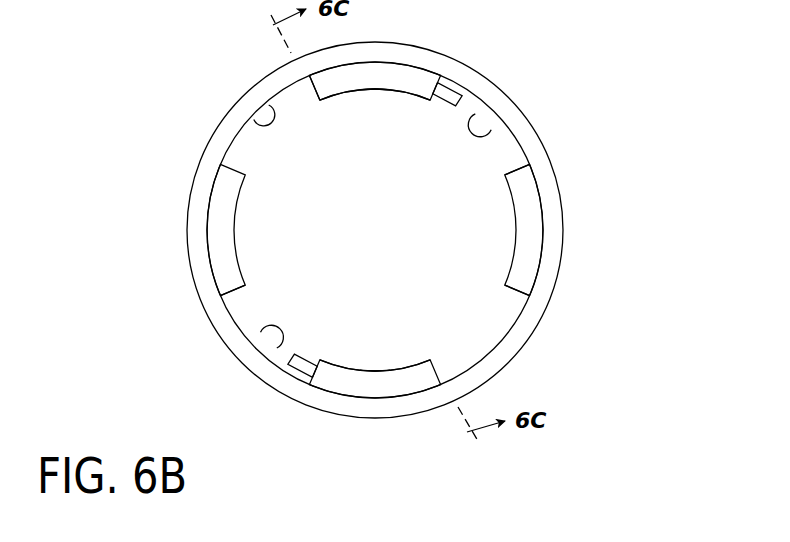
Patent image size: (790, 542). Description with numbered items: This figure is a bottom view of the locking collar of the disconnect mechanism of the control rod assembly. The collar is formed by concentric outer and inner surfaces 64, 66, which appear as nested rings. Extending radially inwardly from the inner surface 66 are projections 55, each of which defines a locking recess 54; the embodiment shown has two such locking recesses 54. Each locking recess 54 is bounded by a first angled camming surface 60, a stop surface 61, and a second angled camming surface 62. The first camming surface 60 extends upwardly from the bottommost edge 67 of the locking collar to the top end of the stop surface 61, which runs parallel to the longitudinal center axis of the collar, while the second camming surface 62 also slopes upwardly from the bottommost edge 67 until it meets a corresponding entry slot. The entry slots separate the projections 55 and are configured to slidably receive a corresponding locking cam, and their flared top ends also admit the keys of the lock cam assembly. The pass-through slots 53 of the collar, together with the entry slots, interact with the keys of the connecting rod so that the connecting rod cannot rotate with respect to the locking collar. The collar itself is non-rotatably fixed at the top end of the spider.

The pass-through slot 53 is at (486, 134).
The locking recess 54 is at (491, 163).
The projection 55 is at (371, 108).
The first angled camming surface 60 is at (517, 151).
The stop surface 61 is at (462, 103).
The second angled camming surface 62 is at (388, 73).
The outer surface 64 is at (524, 345).
The inner surface 66 is at (248, 126).
The bottommost edge 67 is at (238, 162).